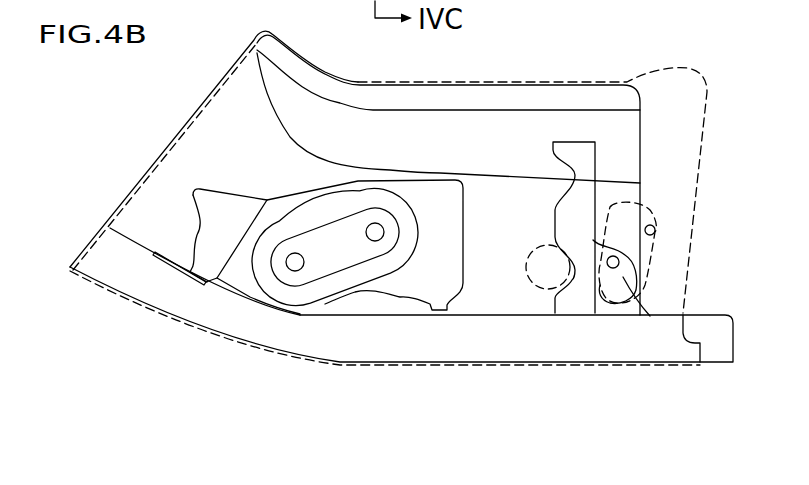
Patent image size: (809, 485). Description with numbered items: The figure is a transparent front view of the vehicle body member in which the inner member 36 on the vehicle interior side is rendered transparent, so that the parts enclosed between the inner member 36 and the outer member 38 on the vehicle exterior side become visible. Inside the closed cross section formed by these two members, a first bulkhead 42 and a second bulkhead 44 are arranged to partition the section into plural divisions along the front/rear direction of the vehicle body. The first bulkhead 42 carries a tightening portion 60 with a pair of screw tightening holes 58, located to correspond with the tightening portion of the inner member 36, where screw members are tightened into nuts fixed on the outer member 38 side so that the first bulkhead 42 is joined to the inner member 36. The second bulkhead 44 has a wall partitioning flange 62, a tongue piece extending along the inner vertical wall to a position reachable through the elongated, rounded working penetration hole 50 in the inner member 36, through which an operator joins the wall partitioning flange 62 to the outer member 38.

The inner member 36 is at (712, 176).
The outer member 38 is at (644, 147).
The first bulkhead 42 is at (467, 203).
The second bulkhead 44 is at (573, 139).
The working penetration hole 50 is at (664, 240).
The screw tightening holes 58 is at (375, 242).
The tightening portion 60 is at (280, 273).
The wall partitioning flange 62 is at (640, 296).